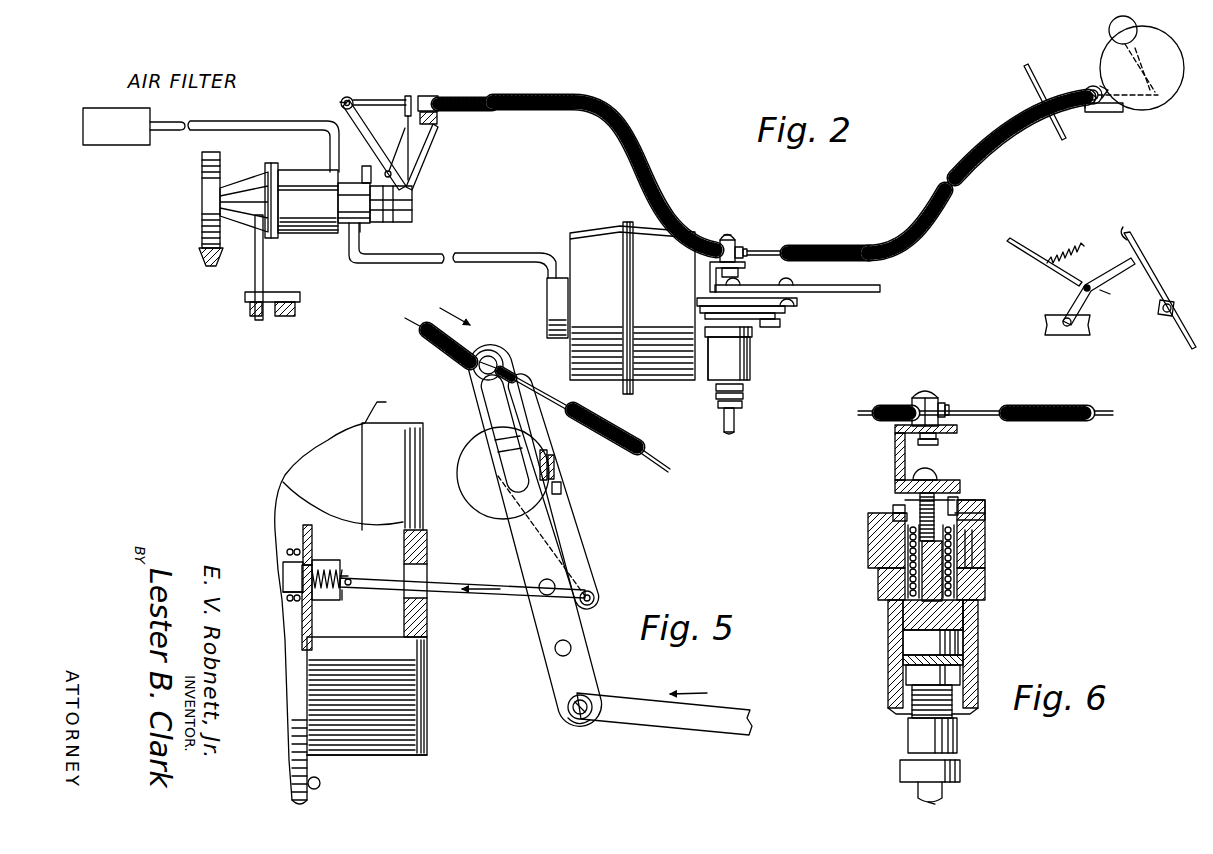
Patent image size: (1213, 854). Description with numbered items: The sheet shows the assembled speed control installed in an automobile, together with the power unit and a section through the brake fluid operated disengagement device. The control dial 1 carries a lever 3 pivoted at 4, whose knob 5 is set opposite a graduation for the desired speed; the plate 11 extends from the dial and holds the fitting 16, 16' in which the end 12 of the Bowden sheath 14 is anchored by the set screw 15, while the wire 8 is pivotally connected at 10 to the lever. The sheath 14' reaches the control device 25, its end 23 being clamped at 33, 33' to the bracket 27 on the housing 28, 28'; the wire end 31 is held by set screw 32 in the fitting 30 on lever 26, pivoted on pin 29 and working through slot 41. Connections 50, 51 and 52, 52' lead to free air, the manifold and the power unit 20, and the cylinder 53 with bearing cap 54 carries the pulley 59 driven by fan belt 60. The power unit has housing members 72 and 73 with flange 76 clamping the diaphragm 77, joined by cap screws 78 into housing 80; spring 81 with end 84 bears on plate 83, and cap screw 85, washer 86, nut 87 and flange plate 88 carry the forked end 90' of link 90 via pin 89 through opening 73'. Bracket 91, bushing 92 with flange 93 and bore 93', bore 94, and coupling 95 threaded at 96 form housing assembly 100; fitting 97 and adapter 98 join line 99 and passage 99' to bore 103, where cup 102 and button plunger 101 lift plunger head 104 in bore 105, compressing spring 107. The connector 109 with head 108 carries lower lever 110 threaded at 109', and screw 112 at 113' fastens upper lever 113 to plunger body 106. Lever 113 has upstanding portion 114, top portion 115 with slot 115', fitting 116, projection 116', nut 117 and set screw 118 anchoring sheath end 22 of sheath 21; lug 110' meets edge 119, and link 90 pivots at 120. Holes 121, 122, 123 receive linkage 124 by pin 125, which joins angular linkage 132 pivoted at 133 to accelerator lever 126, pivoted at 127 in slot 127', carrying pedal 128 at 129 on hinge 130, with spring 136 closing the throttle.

In FIG. 2, the control dial 1 is at (1130, 110).
In FIG. 2, the lever 3 is at (1140, 60).
In FIG. 2, the pivot 4 is at (1144, 73).
In FIG. 2, the knob 5 is at (1109, 32).
In FIG. 2, the Bowden wire 8 is at (776, 252).
In FIG. 5, the Bowden wire 8 is at (561, 400).
In FIG. 6, the Bowden wire 8 is at (995, 410).
In FIG. 2, the pivotal connection 10 is at (1158, 95).
In FIG. 2, the plate 11 is at (1106, 113).
In FIG. 2, the sheath end 12 is at (1105, 90).
In FIG. 2, the Bowden sheath 14 is at (978, 175).
In FIG. 2, the Bowden sheath 14' is at (604, 176).
In FIG. 2, the set screw 15 is at (1085, 106).
In FIG. 2, the fitting 16 is at (1085, 79).
In FIG. 2, the fitting 16' is at (1026, 102).
In FIG. 2, the power unit 20 is at (636, 390).
In FIG. 5, the power unit 20 is at (432, 664).
In FIG. 2, the Bowden sheath 21 is at (793, 249).
In FIG. 5, the Bowden sheath 21 is at (584, 418).
In FIG. 6, the Bowden sheath 21 is at (1050, 404).
In FIG. 2, the Bowden sheath end 22 is at (721, 242).
In FIG. 5, the Bowden sheath end 22 is at (468, 340).
In FIG. 6, the Bowden sheath end 22 is at (904, 405).
In FIG. 2, the sheath end 23 is at (407, 96).
In FIG. 2, the control device 25 is at (338, 242).
In FIG. 2, the lever 26 is at (374, 140).
In FIG. 2, the bracket 27 is at (426, 144).
In FIG. 2, the control device housing 28 is at (411, 204).
In FIG. 2, the control device housing 28' is at (369, 239).
In FIG. 2, the pin 29 is at (392, 171).
In FIG. 2, the fitting 30 is at (356, 101).
In FIG. 2, the wire end 31 is at (340, 104).
In FIG. 2, the set screw 32 is at (345, 97).
In FIG. 2, the clamp 33 is at (455, 86).
In FIG. 2, the clamp 33' is at (445, 122).
In FIG. 2, the slot 41 is at (386, 222).
In FIG. 2, the connection 50 is at (337, 182).
In FIG. 2, the connection 51 is at (366, 168).
In FIG. 2, the connection 52 is at (391, 254).
In FIG. 2, the connection 52' is at (504, 255).
In FIG. 2, the cylinder 53 is at (308, 232).
In FIG. 2, the bearing cap 54 is at (258, 188).
In FIG. 2, the pulley 59 is at (200, 228).
In FIG. 2, the fan belt 60 is at (210, 265).
In FIG. 2, the housing member 72 is at (606, 229).
In FIG. 2, the housing member 73 is at (657, 314).
In FIG. 5, the housing member 73 is at (442, 696).
In FIG. 5, the opening 73' is at (433, 583).
In FIG. 5, the flange 76 is at (310, 806).
In FIG. 5, the diaphragm 77 is at (305, 638).
In FIG. 5, the cap screws 78 is at (322, 783).
In FIG. 5, the housing 80 is at (385, 757).
In FIG. 5, the spring 81 is at (282, 590).
In FIG. 5, the plate 83 is at (303, 530).
In FIG. 5, the spring end 84 is at (285, 553).
In FIG. 5, the cap screw 85 is at (290, 568).
In FIG. 5, the washer 86 is at (318, 550).
In FIG. 5, the nut 87 is at (330, 566).
In FIG. 5, the flange plate 88 is at (345, 578).
In FIG. 5, the pin 89 is at (351, 590).
In FIG. 2, the diaphragm link 90 is at (791, 317).
In FIG. 5, the diaphragm link 90 is at (462, 597).
In FIG. 5, the forked end 90' is at (337, 611).
In FIG. 2, the bracket 91 is at (752, 348).
In FIG. 5, the bracket 91 is at (378, 405).
In FIG. 6, the bracket 91 is at (983, 540).
In FIG. 6, the bushing 92 is at (985, 560).
In FIG. 2, the flange 93 is at (751, 336).
In FIG. 6, the flange 93 is at (993, 503).
In FIG. 6, the bore 93' is at (872, 506).
In FIG. 6, the bore 94 is at (985, 550).
In FIG. 2, the coupling 95 is at (752, 376).
In FIG. 6, the coupling 95 is at (978, 645).
In FIG. 6, the thread 96 is at (978, 620).
In FIG. 2, the fitting 97 is at (746, 389).
In FIG. 6, the fitting 97 is at (908, 742).
In FIG. 2, the adapter 98 is at (745, 405).
In FIG. 6, the adapter 98 is at (960, 770).
In FIG. 2, the line 99 is at (750, 428).
In FIG. 6, the line 99 is at (956, 793).
In FIG. 2, the flow passage 99' is at (717, 444).
In FIG. 6, the flow passage 99' is at (899, 802).
In FIG. 2, the housing assembly 100 is at (706, 386).
In FIG. 6, the housing assembly 100 is at (979, 698).
In FIG. 6, the button plunger 101 is at (905, 644).
In FIG. 6, the flexible cup 102 is at (900, 660).
In FIG. 6, the bore 103 is at (960, 674).
In FIG. 6, the plunger head 104 is at (905, 620).
In FIG. 6, the bore 105 is at (985, 598).
In FIG. 6, the plunger body 106 is at (912, 586).
In FIG. 6, the spring 107 is at (953, 572).
In FIG. 6, the head 108 is at (873, 522).
In FIG. 6, the connector 109 is at (971, 492).
In FIG. 6, the threaded connection 109' is at (869, 493).
In FIG. 2, the lower lever 110 is at (729, 298).
In FIG. 5, the lower lever 110 is at (573, 491).
In FIG. 6, the lower lever 110 is at (898, 478).
In FIG. 2, the lug 110' is at (771, 277).
In FIG. 5, the lug 110' is at (594, 473).
In FIG. 6, the lug 110' is at (991, 493).
In FIG. 5, the screw 112 is at (507, 462).
In FIG. 6, the screw 112 is at (935, 490).
In FIG. 2, the upper lever 113 is at (745, 276).
In FIG. 5, the upper lever 113 is at (534, 536).
In FIG. 6, the upper lever 113 is at (925, 462).
In FIG. 6, the screw opening 113' is at (958, 469).
In FIG. 5, the upstanding portion 114 is at (482, 498).
In FIG. 6, the upstanding portion 114 is at (893, 450).
In FIG. 6, the top portion 115 is at (899, 423).
In FIG. 5, the slot 115' is at (543, 465).
In FIG. 6, the slot 115' is at (963, 427).
In FIG. 2, the fitting 116 is at (755, 234).
In FIG. 5, the fitting 116 is at (519, 348).
In FIG. 6, the fitting 116 is at (958, 396).
In FIG. 6, the threaded projection 116' is at (971, 400).
In FIG. 6, the nut 117 is at (938, 442).
In FIG. 2, the set screw 118 is at (729, 235).
In FIG. 5, the set screw 118 is at (505, 362).
In FIG. 6, the set screw 118 is at (922, 394).
In FIG. 5, the edge surface 119 is at (565, 491).
In FIG. 5, the pivotal connection 120 is at (595, 595).
In FIG. 5, the hole 121 is at (550, 597).
In FIG. 5, the hole 122 is at (567, 640).
In FIG. 5, the hole 123 is at (574, 695).
In FIG. 2, the linkage 124 is at (854, 292).
In FIG. 5, the linkage 124 is at (640, 705).
In FIG. 5, the pivot pin 125 is at (580, 722).
In FIG. 2, the accelerator lever 126 is at (1068, 305).
In FIG. 2, the pivot 127 is at (1067, 338).
In FIG. 2, the slot 127' is at (1123, 309).
In FIG. 2, the accelerator pedal 128 is at (1165, 276).
In FIG. 2, the connection 129 is at (1122, 235).
In FIG. 2, the hinge 130 is at (1176, 307).
In FIG. 2, the angular linkage 132 is at (1018, 250).
In FIG. 2, the pivotal connection 133 is at (1088, 285).
In FIG. 2, the spring 136 is at (1062, 250).